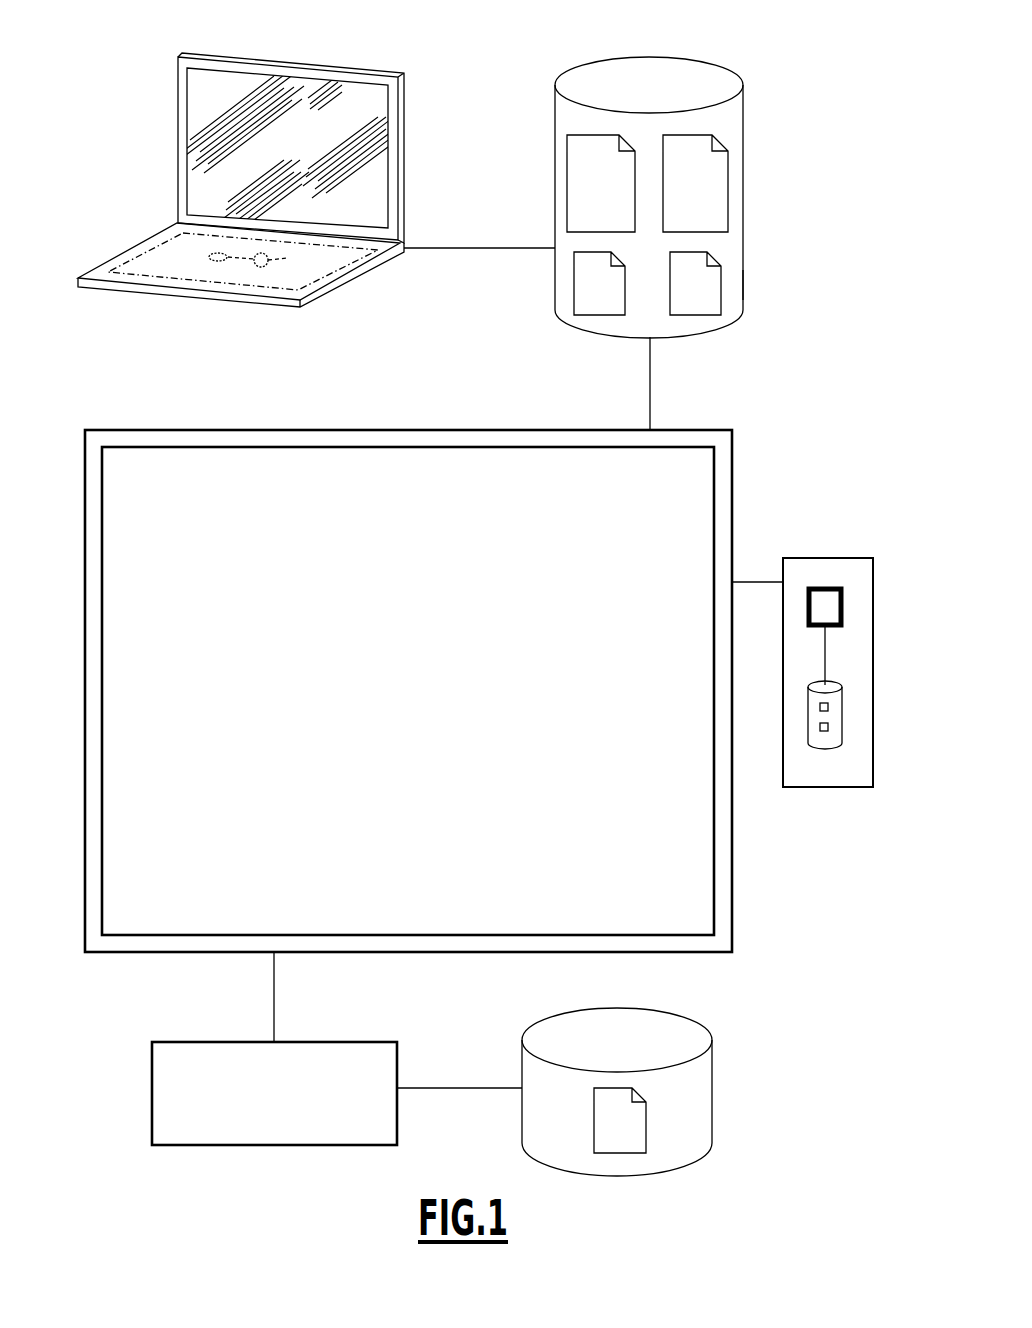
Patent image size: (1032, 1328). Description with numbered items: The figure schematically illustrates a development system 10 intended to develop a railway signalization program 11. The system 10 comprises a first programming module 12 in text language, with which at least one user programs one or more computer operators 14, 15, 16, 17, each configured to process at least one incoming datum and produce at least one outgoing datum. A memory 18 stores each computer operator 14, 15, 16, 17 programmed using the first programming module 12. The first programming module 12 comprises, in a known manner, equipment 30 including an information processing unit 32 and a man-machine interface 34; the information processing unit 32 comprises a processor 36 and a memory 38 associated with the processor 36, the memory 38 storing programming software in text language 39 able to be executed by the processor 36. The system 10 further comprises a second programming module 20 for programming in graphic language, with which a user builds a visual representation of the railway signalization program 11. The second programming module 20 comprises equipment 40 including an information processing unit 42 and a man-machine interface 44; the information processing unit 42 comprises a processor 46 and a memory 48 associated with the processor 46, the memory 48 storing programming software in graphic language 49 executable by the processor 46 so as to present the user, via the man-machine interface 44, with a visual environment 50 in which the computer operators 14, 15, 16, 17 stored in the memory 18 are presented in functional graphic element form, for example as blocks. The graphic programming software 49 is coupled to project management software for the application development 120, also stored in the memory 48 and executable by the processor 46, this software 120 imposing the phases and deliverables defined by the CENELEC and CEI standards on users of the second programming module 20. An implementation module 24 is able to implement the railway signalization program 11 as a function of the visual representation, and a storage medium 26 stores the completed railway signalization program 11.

The development system 10 is at (663, 190).
The railway signalization program 11 is at (645, 1143).
The first programming module 12 is at (321, 148).
The computer operator 14 is at (587, 197).
The computer operator 15 is at (705, 205).
The computer operator 16 is at (588, 308).
The computer operator 17 is at (693, 305).
The memory 18 is at (730, 287).
The second programming module 20 is at (479, 650).
The implementation module 24 is at (262, 1109).
The storage medium 26 is at (637, 1080).
The equipment 30 is at (268, 197).
The information processing unit 32 is at (312, 290).
The man-machine interface 34 is at (357, 194).
The processor 36 is at (206, 263).
The memory 38 is at (261, 268).
The programming software in text language 39 is at (270, 262).
The equipment 40 is at (736, 509).
The information processing unit 42 is at (800, 640).
The man-machine interface 44 is at (416, 427).
The processor 46 is at (825, 607).
The memory 48 is at (796, 701).
The programming software in graphic language 49 is at (820, 727).
The visual environment 50 is at (236, 473).
The project management software for the application development 120 is at (820, 707).